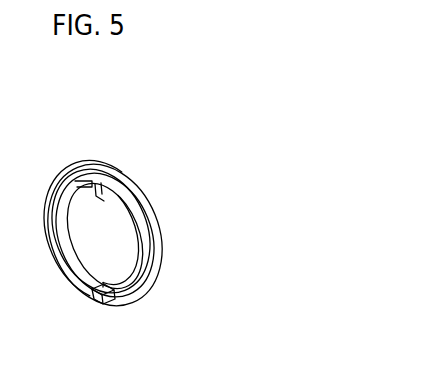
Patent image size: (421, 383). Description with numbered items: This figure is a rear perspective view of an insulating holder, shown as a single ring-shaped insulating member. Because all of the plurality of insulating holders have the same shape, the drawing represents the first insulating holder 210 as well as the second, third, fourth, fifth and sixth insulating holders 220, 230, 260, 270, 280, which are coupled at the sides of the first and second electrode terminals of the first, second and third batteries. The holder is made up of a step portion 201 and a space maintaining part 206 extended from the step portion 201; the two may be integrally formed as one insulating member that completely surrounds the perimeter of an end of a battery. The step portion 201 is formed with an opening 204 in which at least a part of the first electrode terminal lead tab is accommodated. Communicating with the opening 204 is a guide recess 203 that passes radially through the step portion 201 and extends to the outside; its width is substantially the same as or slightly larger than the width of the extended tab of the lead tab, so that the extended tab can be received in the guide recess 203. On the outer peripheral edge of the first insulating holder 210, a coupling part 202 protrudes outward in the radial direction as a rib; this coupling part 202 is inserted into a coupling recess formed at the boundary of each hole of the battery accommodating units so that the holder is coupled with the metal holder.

The step portion 201 is at (70, 271).
The coupling part 202 is at (96, 304).
The guide recess 203 is at (100, 183).
The opening 204 is at (141, 255).
The space maintaining part 206 is at (127, 296).
The first insulating holder 210 is at (194, 225).
The second insulating holder 220 is at (194, 225).
The third insulating holder 230 is at (194, 225).
The fourth insulating holder 260 is at (194, 225).
The fifth insulating holder 270 is at (194, 225).
The sixth insulating holder 280 is at (160, 150).